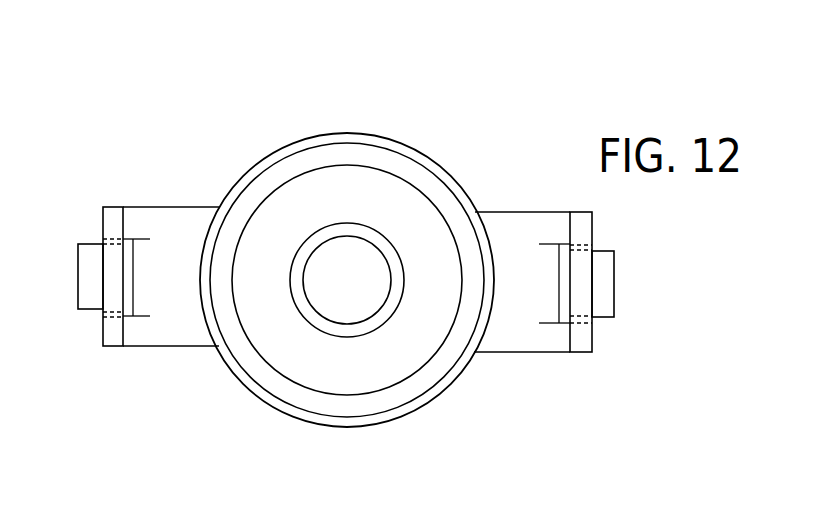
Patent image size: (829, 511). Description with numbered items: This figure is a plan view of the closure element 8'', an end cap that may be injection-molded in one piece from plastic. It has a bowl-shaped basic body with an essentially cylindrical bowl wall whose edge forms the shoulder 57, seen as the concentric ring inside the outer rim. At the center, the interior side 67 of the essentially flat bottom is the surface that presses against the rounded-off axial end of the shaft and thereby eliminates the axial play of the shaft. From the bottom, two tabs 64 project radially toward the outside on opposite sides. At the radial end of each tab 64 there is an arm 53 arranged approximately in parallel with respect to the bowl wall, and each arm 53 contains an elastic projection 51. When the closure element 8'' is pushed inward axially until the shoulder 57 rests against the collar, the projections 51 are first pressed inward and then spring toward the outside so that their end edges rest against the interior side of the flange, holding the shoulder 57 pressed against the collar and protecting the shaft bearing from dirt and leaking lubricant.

The closure element 8'' is at (347, 266).
The shoulder 57 is at (418, 167).
The interior side of the bottom 67 is at (358, 278).
The tabs 64 is at (166, 219).
The arms 53 is at (114, 337).
The elastic projections 51 is at (89, 253).